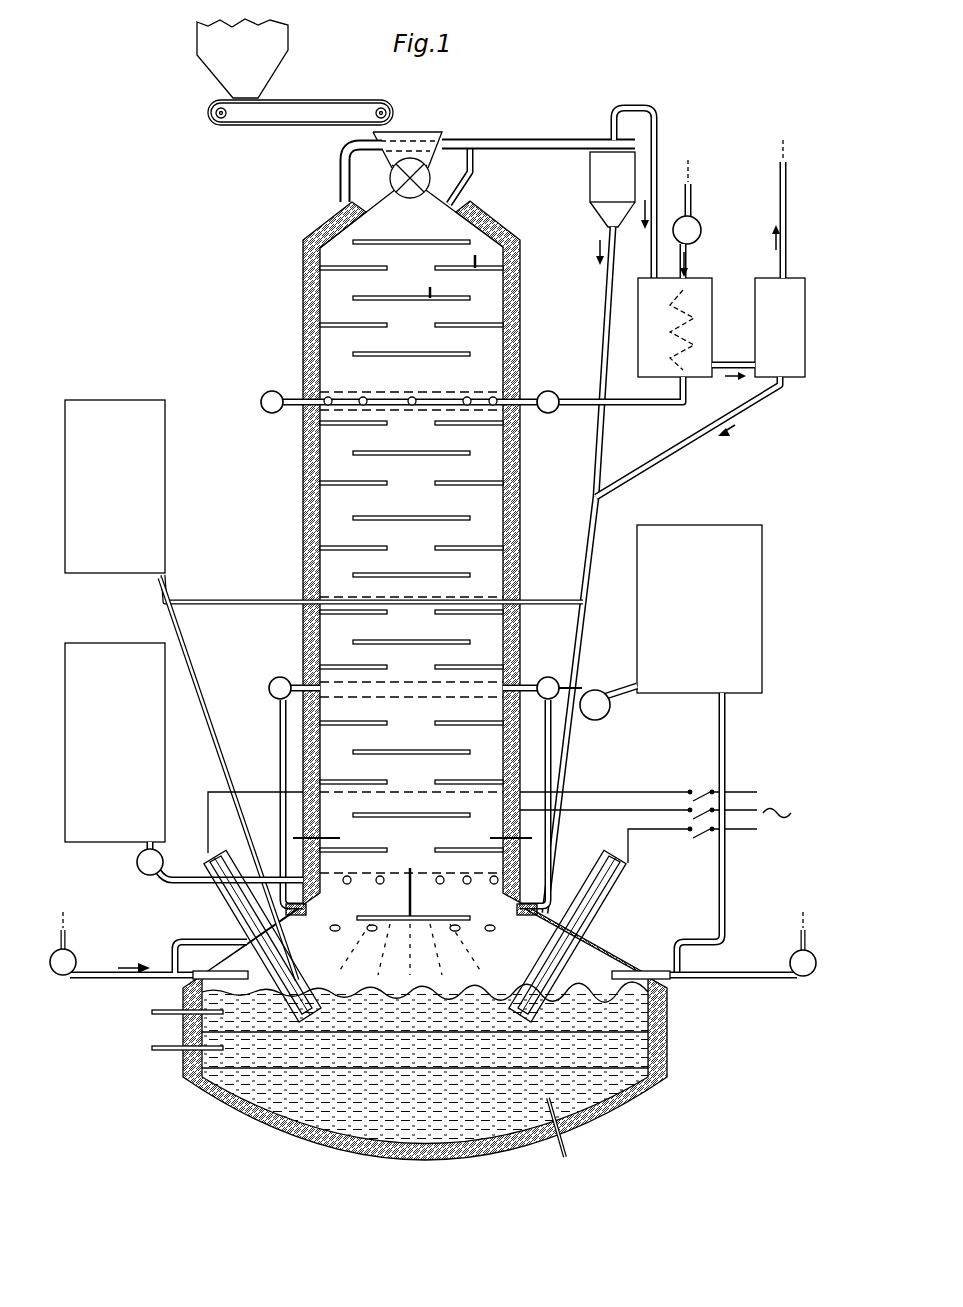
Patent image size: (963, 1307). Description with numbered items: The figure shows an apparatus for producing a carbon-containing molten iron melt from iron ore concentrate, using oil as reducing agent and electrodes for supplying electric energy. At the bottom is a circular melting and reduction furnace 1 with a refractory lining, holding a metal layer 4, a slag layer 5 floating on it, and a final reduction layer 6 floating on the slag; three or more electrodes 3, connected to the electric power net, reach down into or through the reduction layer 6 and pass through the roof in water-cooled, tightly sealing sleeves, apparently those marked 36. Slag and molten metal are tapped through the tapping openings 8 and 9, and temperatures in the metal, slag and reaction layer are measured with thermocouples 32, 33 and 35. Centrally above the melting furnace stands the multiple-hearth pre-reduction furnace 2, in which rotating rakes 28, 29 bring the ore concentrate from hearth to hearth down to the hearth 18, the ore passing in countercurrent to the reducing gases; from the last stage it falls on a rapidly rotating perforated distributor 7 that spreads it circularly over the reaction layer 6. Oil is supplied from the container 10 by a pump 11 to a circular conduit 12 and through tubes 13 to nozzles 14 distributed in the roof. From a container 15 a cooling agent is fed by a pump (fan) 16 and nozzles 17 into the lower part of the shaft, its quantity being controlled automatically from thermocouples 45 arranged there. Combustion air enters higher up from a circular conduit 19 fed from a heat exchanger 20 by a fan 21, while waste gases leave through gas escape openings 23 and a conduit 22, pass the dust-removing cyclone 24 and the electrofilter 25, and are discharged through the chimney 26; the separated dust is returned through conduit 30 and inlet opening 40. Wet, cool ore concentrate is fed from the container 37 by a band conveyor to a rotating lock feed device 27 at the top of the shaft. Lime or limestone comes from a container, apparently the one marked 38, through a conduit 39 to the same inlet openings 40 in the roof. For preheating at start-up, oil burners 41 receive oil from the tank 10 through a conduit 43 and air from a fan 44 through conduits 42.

The melting and reduction furnace 1 is at (625, 1112).
The pre-reduction furnace 2 is at (520, 516).
The electrodes 3 is at (230, 898).
The metal layer 4 is at (504, 1116).
The slag layer 5 is at (492, 1068).
The final reduction layer 6 is at (478, 1028).
The perforated distributor 7 is at (440, 960).
The tapping opening 8 is at (668, 1050).
The tapping opening 9 is at (184, 1084).
The container 10 is at (704, 644).
The pump 11 is at (600, 720).
The circular conduit 12 is at (550, 676).
The tubes 13 is at (279, 729).
The nozzles 14 is at (312, 935).
The container 15 is at (124, 759).
The pump 16 is at (143, 876).
The nozzles 17 is at (322, 882).
The hearth 18 is at (470, 780).
The circular conduit 19 is at (550, 414).
The heat exchanger 20 is at (640, 370).
The fan 21 is at (700, 238).
The conduit 22 is at (588, 140).
The gas escape openings 23 is at (458, 210).
The dust-removing cyclone 24 is at (628, 202).
The electrofilter 25 is at (796, 356).
The chimney 26 is at (779, 224).
The lock feed device 27 is at (410, 200).
The rotating rake 28 is at (428, 291).
The rotating rake 29 is at (474, 261).
The conduit 30 is at (598, 290).
The thermocouple 32 is at (572, 1154).
The thermocouple 33 is at (152, 1048).
The thermocouple 35 is at (152, 1012).
The electrodes 36 is at (265, 900).
The container 37 is at (262, 71).
The reservoir 38 is at (128, 504).
The conduit 39 is at (214, 606).
The inlet opening 40 is at (298, 922).
The oil burners 41 is at (668, 990).
The conduits 42 is at (108, 980).
The conduit 43 is at (726, 884).
The fan 44 is at (76, 956).
The thermocouples 45 is at (300, 836).